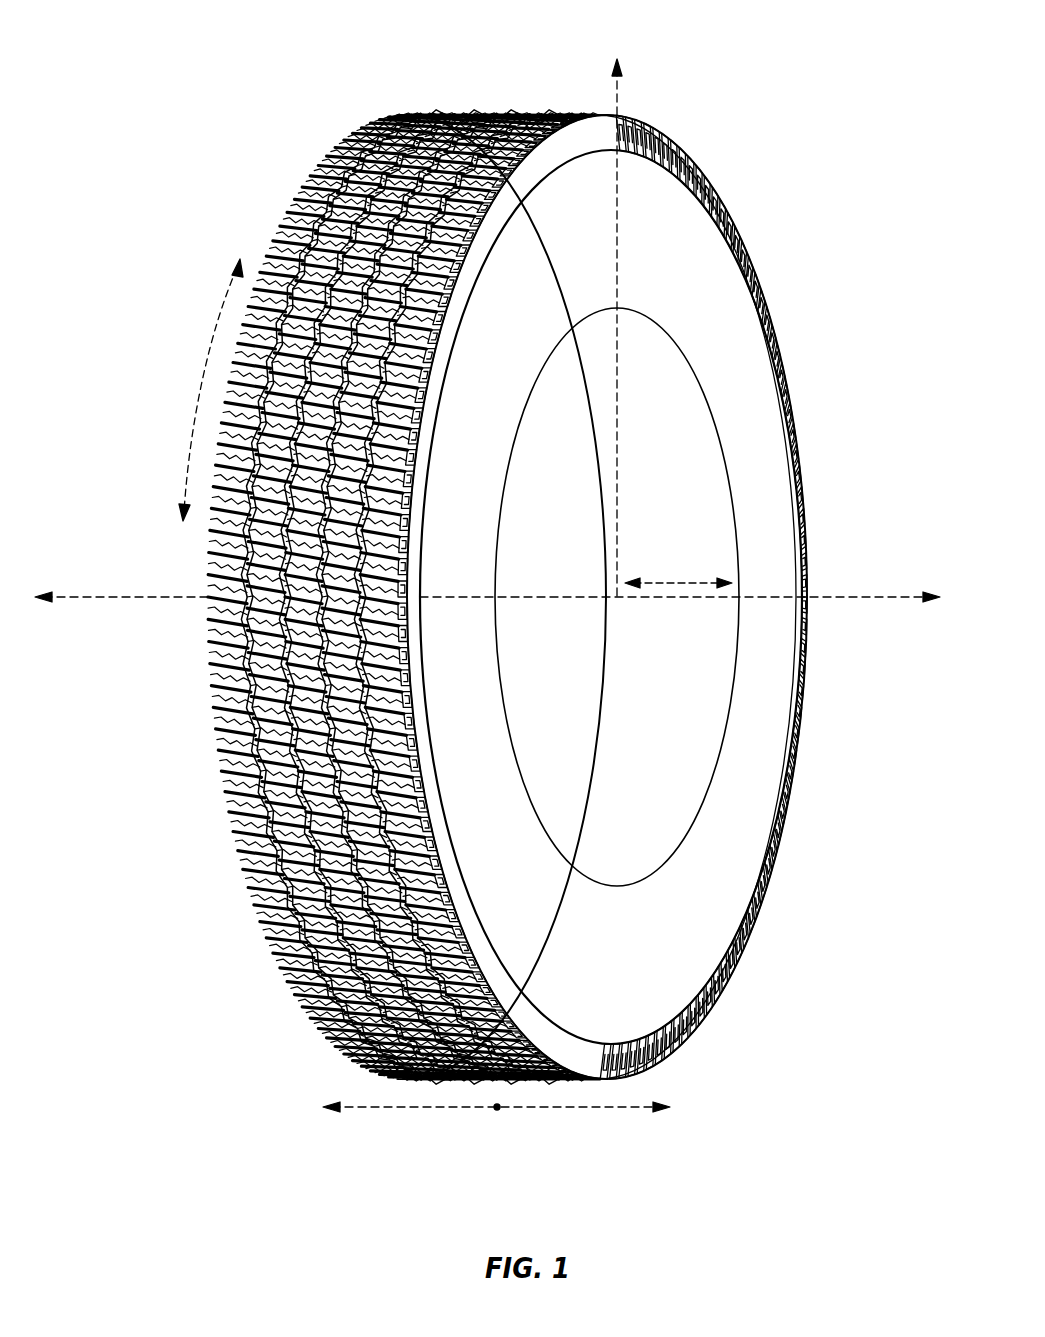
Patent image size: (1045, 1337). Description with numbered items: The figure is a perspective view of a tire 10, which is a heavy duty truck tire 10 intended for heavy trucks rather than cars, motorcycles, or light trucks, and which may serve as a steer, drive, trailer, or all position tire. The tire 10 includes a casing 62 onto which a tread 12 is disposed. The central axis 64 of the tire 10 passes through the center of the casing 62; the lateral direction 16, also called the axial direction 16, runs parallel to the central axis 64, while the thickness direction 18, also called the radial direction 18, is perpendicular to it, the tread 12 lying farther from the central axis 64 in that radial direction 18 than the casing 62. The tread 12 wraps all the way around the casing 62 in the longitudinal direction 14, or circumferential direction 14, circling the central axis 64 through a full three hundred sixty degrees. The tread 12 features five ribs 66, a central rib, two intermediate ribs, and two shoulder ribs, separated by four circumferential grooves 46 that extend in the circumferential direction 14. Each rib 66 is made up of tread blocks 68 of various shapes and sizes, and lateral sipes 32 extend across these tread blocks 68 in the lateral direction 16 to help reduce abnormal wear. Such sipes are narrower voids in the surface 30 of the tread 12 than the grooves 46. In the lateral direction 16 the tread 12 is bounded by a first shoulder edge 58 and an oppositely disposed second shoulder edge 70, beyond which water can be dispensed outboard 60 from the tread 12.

The tire 10 is at (283, 53).
The tread 12 is at (352, 772).
The longitudinal direction 14 is at (202, 380).
The lateral direction 16 is at (682, 580).
The thickness direction 18 is at (618, 97).
The surface 30 is at (268, 883).
The lateral sipes 32 is at (378, 163).
The circumferential grooves 46 is at (338, 182).
The first shoulder edge 58 is at (320, 1027).
The outboard 60 is at (415, 1110).
The casing 62 is at (735, 305).
The central axis 64 is at (868, 600).
The ribs 66 is at (308, 697).
The tread blocks 68 is at (340, 620).
The second shoulder edge 70 is at (535, 1028).